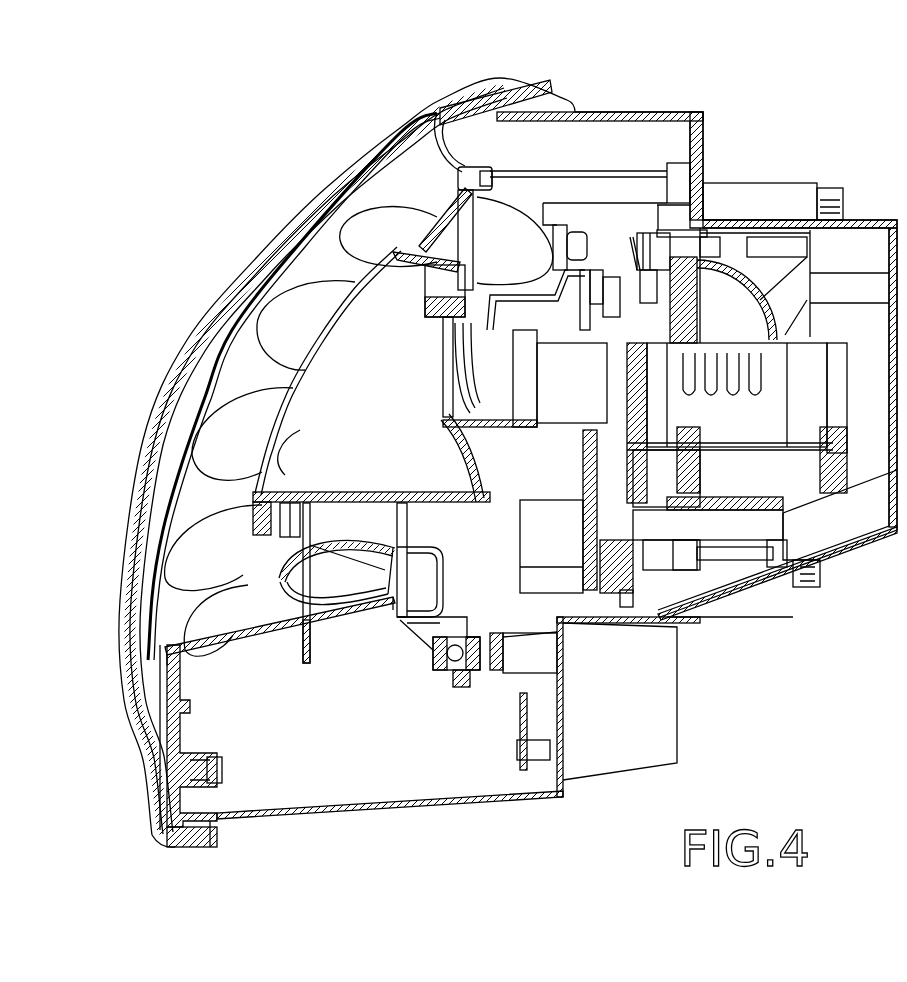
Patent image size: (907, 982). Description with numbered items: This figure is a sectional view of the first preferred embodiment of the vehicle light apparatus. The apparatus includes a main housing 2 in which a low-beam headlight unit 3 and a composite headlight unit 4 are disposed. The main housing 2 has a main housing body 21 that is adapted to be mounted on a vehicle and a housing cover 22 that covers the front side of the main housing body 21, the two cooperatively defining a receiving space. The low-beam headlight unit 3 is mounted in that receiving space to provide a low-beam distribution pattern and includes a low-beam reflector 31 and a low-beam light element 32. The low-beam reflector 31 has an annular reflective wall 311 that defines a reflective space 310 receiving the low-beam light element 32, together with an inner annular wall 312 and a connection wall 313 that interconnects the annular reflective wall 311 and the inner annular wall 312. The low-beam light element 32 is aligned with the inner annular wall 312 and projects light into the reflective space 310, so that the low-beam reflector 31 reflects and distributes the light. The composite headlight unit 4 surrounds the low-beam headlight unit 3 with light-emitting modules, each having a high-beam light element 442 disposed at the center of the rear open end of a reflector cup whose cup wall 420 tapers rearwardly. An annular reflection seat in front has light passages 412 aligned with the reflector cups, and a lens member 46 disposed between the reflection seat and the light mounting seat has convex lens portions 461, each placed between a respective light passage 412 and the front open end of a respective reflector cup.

The main housing 2 is at (581, 103).
The main housing body 21 is at (665, 112).
The housing cover 22 is at (325, 188).
The low-beam headlight unit 3 is at (400, 225).
The low-beam reflector 31 is at (227, 338).
The reflective space 310 is at (307, 449).
The annular reflective wall 311 is at (240, 660).
The inner annular wall 312 is at (500, 340).
The connection wall 313 is at (445, 420).
The low-beam light element 32 is at (497, 352).
The composite headlight unit 4 is at (315, 256).
The light passages 412 is at (230, 425).
The cup wall 420 is at (340, 500).
The high-beam light element 442 is at (350, 625).
The lens member 46 is at (178, 735).
The convex lens portions 461 is at (290, 632).